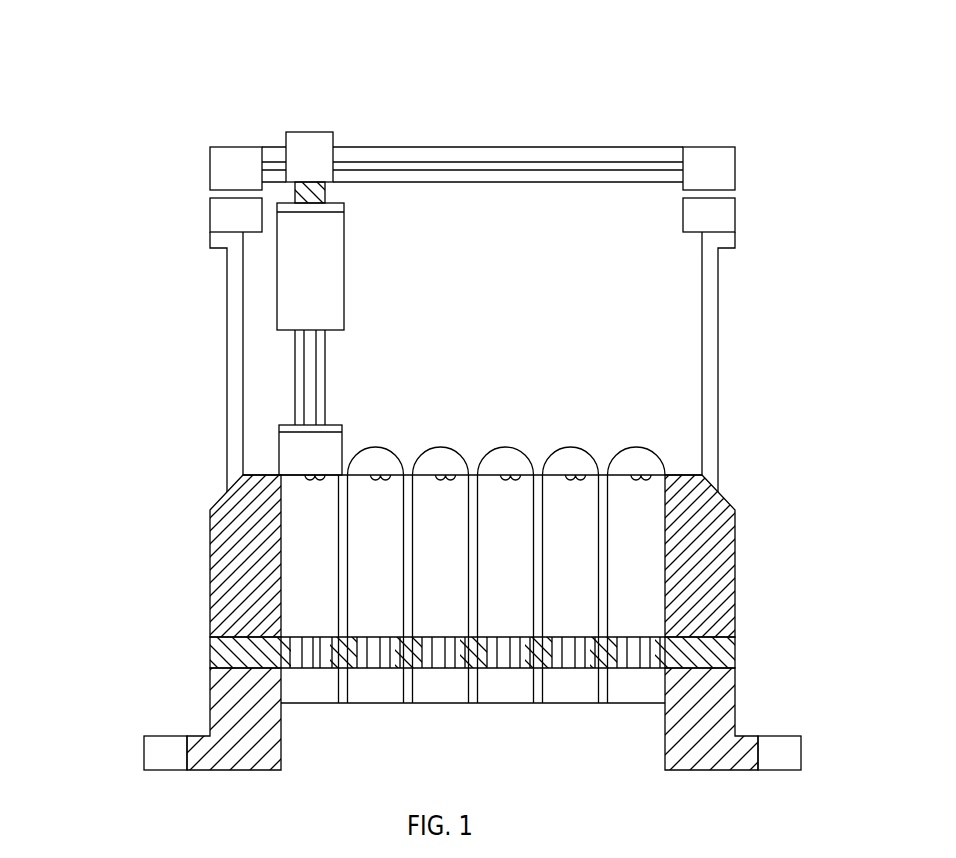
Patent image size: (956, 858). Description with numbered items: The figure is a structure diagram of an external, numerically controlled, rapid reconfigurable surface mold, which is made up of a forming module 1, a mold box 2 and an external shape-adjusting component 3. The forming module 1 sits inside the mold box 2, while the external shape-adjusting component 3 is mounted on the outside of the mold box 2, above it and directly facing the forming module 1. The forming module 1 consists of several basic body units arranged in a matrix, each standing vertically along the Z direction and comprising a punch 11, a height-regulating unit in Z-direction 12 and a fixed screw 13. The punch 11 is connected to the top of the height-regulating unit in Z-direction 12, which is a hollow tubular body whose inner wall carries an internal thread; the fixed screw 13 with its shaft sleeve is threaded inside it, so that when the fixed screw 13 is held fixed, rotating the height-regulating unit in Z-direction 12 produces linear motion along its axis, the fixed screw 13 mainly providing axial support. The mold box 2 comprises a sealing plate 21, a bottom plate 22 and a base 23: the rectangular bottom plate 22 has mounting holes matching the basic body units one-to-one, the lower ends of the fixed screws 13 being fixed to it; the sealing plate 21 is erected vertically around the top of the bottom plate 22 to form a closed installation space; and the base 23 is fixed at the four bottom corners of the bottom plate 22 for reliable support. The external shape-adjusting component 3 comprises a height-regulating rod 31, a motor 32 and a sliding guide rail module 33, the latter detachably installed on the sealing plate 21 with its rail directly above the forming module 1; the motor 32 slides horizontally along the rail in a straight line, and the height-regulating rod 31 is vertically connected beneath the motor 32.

The forming module 1 is at (465, 427).
The punch 11 is at (642, 457).
The height-regulating unit in Z-direction 12 is at (642, 502).
The fixed screw 13 is at (638, 662).
The mold box 2 is at (188, 515).
The sealing plate 21 is at (227, 522).
The bottom plate 22 is at (227, 652).
The base 23 is at (227, 715).
The external shape-adjusting component 3 is at (377, 127).
The height-regulating rod 31 is at (298, 298).
The motor 32 is at (297, 155).
The sliding guide rail module 33 is at (227, 213).